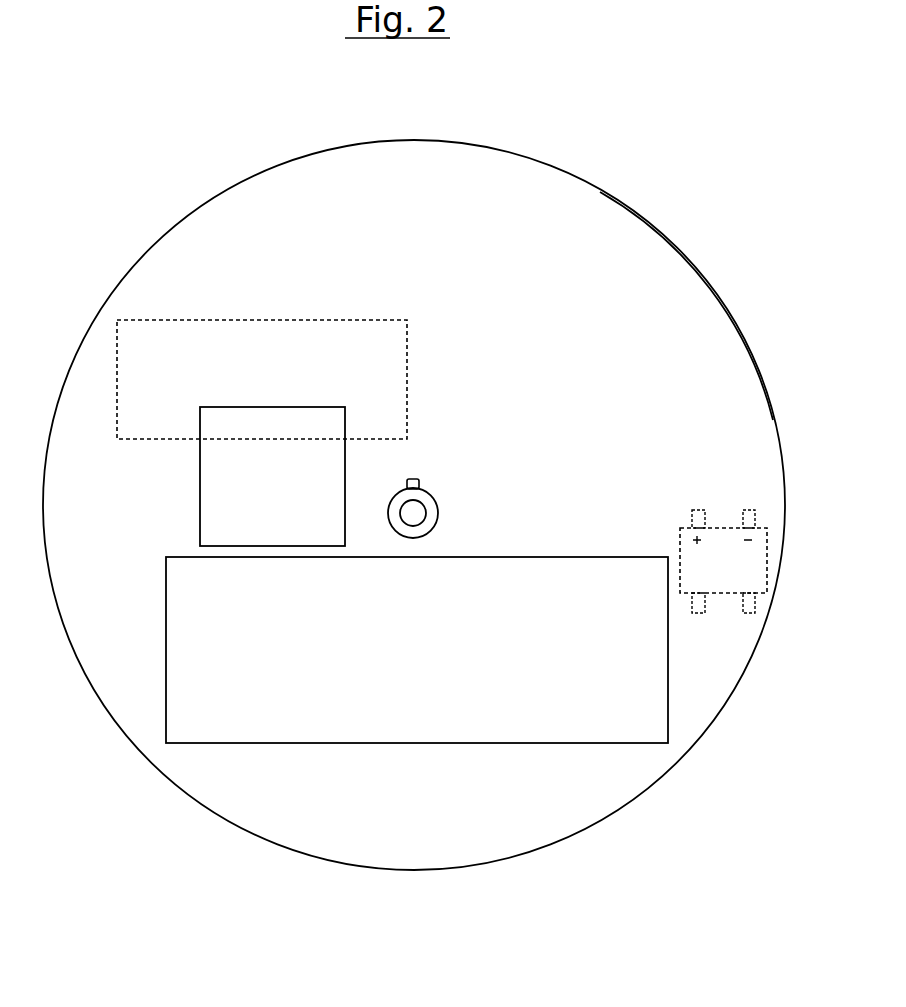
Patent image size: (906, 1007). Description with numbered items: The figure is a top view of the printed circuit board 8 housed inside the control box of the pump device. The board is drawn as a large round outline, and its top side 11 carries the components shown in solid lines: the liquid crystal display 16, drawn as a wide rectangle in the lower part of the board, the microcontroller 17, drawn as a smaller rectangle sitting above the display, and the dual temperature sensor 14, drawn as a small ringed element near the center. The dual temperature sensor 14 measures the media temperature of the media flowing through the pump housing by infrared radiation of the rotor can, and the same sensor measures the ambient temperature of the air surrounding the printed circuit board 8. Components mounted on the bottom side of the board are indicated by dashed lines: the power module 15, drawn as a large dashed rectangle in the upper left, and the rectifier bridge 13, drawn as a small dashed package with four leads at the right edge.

The printed circuit board 8 is at (718, 295).
The top side 11 is at (633, 233).
The rectifier bridge 13 is at (767, 537).
The dual temperature sensor 14 is at (438, 508).
The power module 15 is at (133, 320).
The liquid crystal display (LCD) 16 is at (655, 693).
The microcontroller 17 is at (200, 538).